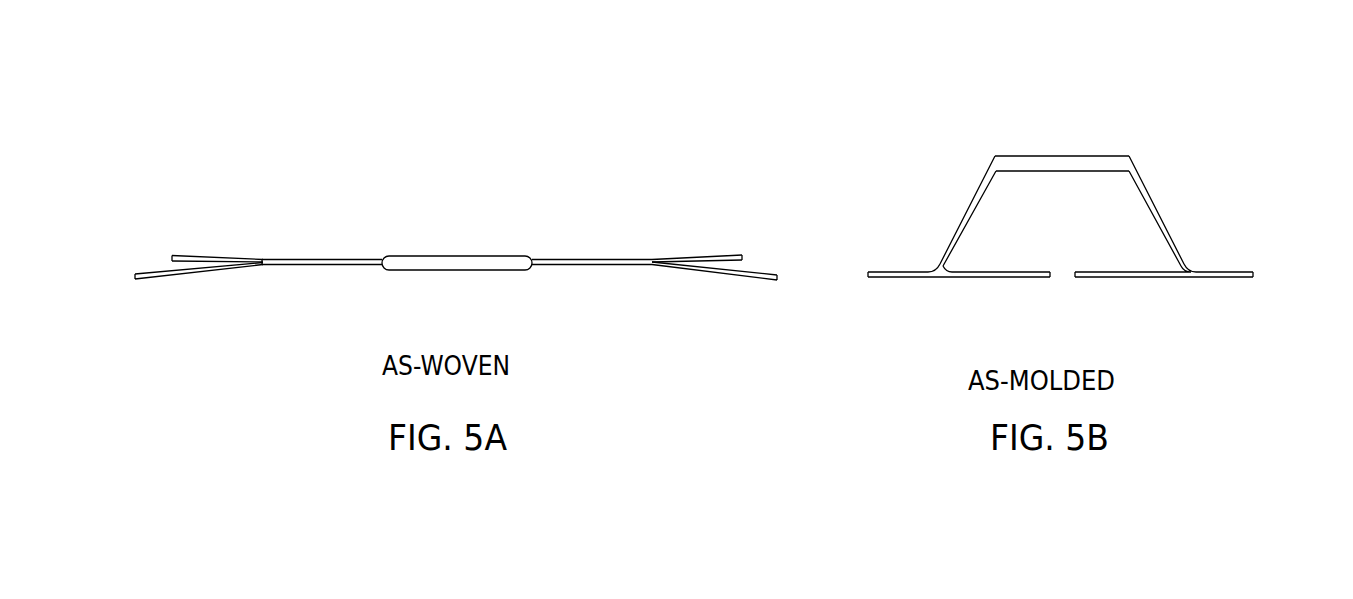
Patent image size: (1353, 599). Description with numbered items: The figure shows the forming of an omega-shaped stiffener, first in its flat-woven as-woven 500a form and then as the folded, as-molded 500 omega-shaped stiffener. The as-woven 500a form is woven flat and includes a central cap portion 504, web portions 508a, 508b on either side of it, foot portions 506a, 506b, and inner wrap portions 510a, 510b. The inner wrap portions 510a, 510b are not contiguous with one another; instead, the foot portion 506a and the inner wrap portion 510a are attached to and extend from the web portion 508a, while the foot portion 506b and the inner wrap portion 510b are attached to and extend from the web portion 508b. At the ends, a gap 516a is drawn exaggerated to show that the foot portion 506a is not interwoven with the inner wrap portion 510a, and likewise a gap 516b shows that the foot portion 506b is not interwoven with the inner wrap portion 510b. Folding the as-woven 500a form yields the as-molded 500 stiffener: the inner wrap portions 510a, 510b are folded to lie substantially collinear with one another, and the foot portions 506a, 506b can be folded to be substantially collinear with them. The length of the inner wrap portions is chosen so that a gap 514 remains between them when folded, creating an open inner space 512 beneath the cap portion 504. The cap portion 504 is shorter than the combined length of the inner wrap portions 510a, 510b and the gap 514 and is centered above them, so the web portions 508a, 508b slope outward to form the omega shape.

In FIG. 5A, the as-woven form 500a is at (350, 150).
In FIG. 5B, the as-molded omega-shaped stiffener 500 is at (975, 118).
In FIG. 5A, the cap portion 504 is at (427, 257).
In FIG. 5B, the cap portion 504 is at (1060, 155).
In FIG. 5A, the foot portion 506a is at (183, 257).
In FIG. 5B, the foot portion 506a is at (897, 277).
In FIG. 5A, the foot portion 506b is at (703, 255).
In FIG. 5B, the foot portion 506b is at (1235, 277).
In FIG. 5A, the web portion 508a is at (300, 258).
In FIG. 5B, the web portion 508a is at (960, 222).
In FIG. 5A, the web portion 508b is at (611, 258).
In FIG. 5B, the web portion 508b is at (1175, 240).
In FIG. 5A, the inner wrap portion 510a is at (162, 277).
In FIG. 5B, the inner wrap portion 510a is at (977, 277).
In FIG. 5A, the inner wrap portion 510b is at (718, 275).
In FIG. 5B, the inner wrap portion 510b is at (1140, 277).
In FIG. 5B, the open inner space 512 is at (1120, 207).
In FIG. 5B, the gap 514 is at (1062, 277).
In FIG. 5A, the gap 516a is at (165, 262).
In FIG. 5A, the gap 516b is at (742, 267).